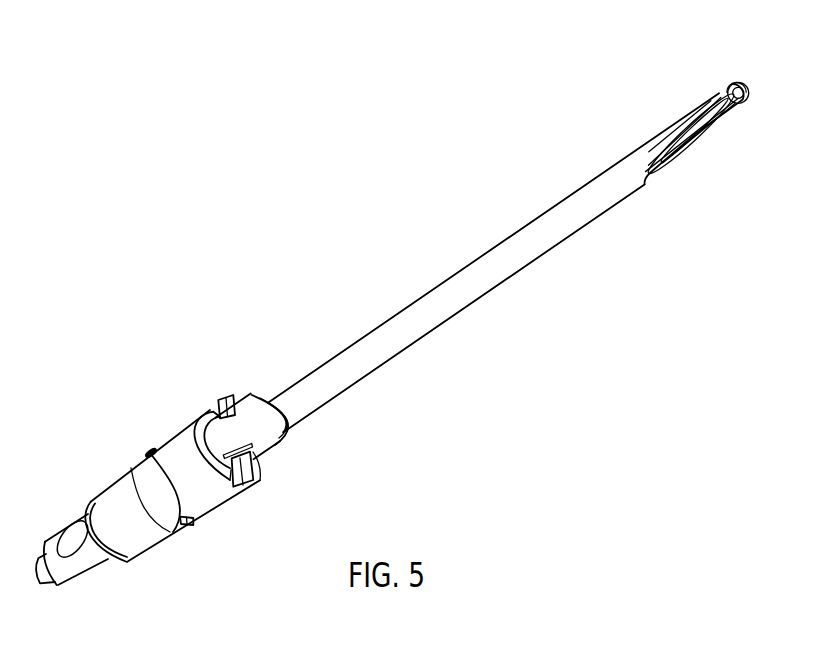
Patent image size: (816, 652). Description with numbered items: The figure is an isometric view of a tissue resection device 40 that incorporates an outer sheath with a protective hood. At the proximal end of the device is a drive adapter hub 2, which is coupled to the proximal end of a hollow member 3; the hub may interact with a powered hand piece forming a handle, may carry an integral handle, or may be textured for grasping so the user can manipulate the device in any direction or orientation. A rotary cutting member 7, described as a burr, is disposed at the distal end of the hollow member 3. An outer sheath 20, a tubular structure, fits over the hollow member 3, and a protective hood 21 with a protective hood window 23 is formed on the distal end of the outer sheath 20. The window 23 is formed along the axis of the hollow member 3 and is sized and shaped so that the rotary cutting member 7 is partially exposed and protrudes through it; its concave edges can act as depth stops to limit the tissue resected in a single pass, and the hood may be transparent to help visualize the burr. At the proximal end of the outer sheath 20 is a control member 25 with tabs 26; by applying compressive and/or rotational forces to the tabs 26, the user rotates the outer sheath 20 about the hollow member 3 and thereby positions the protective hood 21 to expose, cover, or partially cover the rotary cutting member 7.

The drive adapter hub 2 is at (142, 431).
The hollow member 3 is at (655, 178).
The rotary cutting member 7 is at (750, 64).
The outer sheath 20 is at (471, 262).
The protective hood 21 is at (631, 143).
The protective hood window 23 is at (660, 192).
The control member 25 is at (279, 469).
The tabs 26 is at (226, 396).
The tissue resection device 40 is at (337, 157).